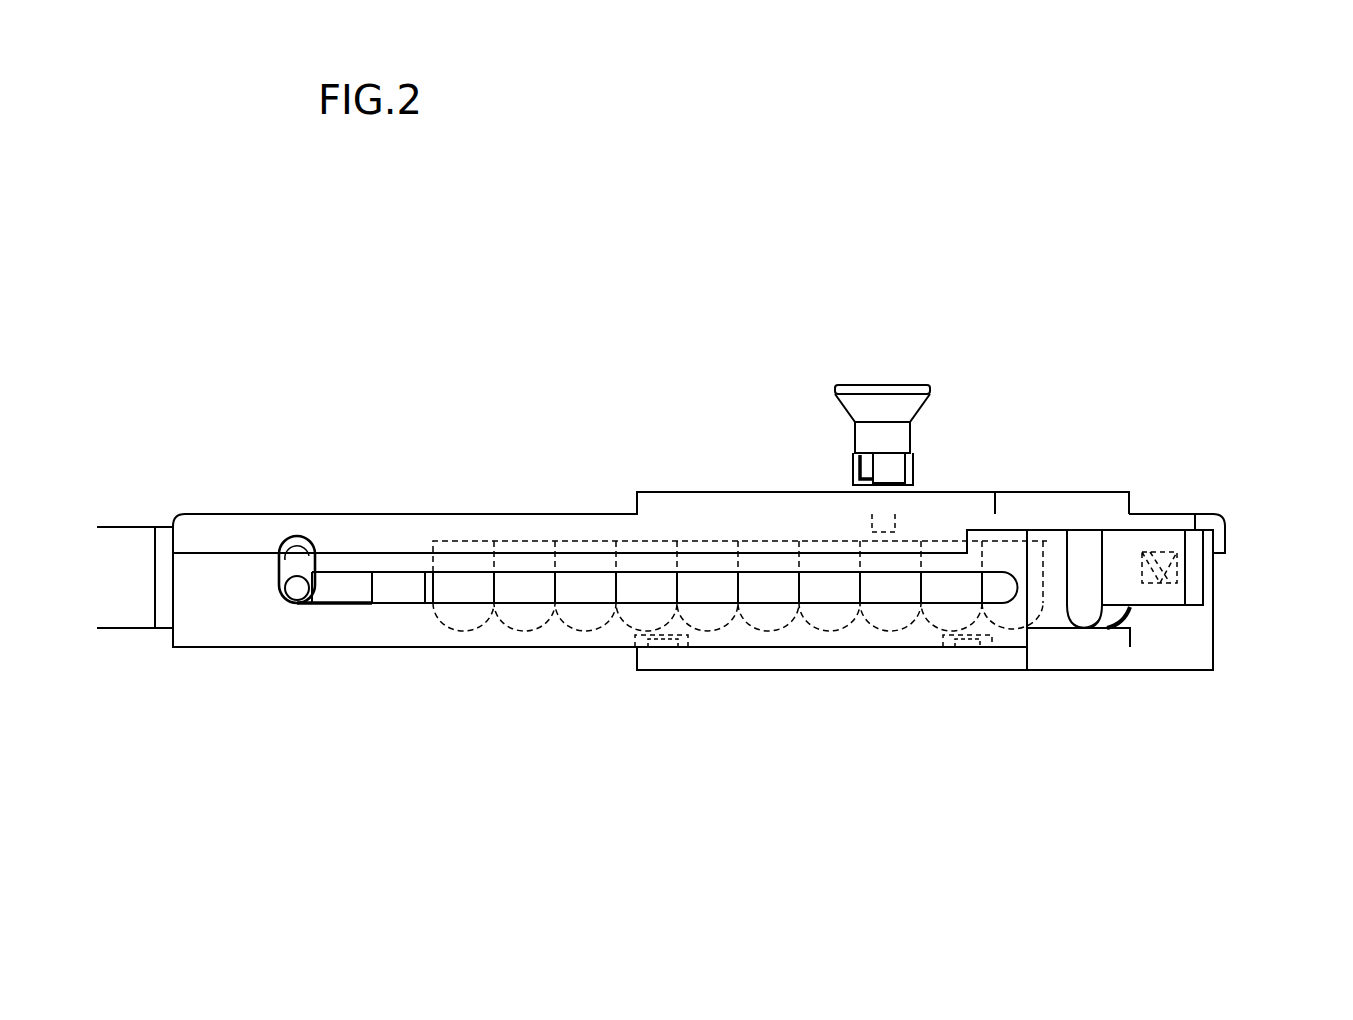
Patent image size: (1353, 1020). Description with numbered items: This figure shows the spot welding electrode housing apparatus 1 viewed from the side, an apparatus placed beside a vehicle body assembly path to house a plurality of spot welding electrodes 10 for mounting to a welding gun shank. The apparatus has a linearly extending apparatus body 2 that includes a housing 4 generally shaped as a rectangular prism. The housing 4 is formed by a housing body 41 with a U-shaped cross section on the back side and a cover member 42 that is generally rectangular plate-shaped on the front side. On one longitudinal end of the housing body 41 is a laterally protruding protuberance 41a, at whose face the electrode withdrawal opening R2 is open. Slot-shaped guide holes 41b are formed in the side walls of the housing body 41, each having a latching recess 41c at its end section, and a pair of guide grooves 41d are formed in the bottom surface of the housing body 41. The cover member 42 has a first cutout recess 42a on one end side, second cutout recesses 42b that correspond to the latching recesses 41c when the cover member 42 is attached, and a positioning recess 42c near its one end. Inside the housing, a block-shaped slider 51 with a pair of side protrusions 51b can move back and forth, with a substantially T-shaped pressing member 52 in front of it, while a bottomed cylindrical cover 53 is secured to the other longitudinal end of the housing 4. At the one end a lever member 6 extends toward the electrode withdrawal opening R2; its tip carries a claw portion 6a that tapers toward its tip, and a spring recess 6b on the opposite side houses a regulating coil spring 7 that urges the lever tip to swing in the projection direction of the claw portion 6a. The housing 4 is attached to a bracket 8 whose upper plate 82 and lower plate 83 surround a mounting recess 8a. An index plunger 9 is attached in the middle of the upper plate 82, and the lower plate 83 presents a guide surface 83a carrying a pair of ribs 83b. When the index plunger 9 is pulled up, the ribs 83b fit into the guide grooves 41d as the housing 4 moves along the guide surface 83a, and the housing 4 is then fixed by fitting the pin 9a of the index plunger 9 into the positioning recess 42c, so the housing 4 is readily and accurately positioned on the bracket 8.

The spot welding electrode housing apparatus 1 is at (1158, 346).
The apparatus body 2 is at (746, 463).
The housing 4 is at (739, 602).
The lever member 6 is at (1160, 632).
The claw portion 6a is at (1100, 580).
The spring recess 6b is at (1178, 573).
The regulating coil spring 7 is at (1193, 580).
The bracket 8 is at (740, 668).
The mounting recess 8a is at (794, 647).
The index plunger 9 is at (942, 375).
The pin 9a is at (897, 526).
The spot welding electrode 10 is at (1052, 540).
The housing body 41 is at (515, 672).
The protuberance 41a is at (1207, 626).
The guide hole 41b is at (400, 596).
The latching recess 41c is at (298, 538).
The guide groove 41d is at (652, 649).
The cover member 42 is at (489, 498).
The first cutout recess 42a is at (1157, 519).
The second cutout recess 42b is at (279, 569).
The positioning recess 42c is at (877, 511).
The slider 51 is at (346, 591).
The protrusion 51b is at (298, 605).
The pressing member 52 is at (398, 583).
The cylindrical cover 53 is at (120, 527).
The upper plate 82 is at (1083, 491).
The lower plate 83 is at (841, 671).
The guide surface 83a is at (743, 640).
The rib 83b is at (683, 649).
The electrode withdrawal opening R2 is at (1078, 562).